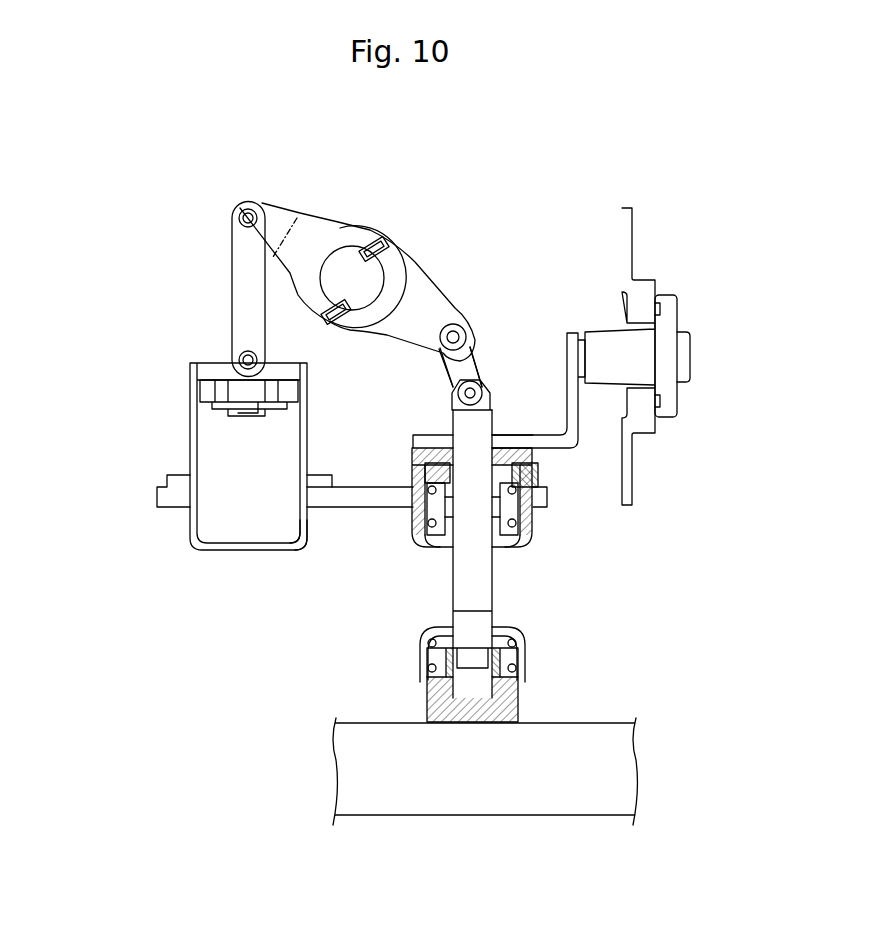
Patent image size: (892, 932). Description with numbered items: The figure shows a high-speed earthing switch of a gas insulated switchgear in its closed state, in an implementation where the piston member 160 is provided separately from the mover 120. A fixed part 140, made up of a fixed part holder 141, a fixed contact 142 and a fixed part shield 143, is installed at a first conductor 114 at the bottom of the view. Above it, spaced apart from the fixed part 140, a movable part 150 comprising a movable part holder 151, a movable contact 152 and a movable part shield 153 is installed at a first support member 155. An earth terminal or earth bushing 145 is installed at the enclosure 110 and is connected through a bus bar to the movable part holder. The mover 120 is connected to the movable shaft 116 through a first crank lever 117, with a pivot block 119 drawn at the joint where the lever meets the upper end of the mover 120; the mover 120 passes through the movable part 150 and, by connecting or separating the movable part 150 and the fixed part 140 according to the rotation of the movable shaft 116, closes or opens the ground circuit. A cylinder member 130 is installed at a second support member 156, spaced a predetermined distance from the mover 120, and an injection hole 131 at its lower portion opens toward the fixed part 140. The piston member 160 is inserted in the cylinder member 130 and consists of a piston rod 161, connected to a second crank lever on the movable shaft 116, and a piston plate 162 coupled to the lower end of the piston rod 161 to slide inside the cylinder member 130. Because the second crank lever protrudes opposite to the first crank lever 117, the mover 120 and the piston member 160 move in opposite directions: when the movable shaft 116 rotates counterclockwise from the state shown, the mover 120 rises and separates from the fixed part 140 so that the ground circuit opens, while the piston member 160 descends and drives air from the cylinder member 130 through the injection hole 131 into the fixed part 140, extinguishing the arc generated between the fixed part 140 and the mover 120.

The enclosure 110 is at (642, 290).
The first conductor 114 is at (400, 797).
The movable shaft 116 is at (420, 305).
The first crank lever 117 is at (307, 235).
The pivot block 119 is at (528, 430).
The mover 120 is at (468, 579).
The cylinder member 130 is at (185, 533).
The injection hole 131 is at (303, 545).
The fixed part 140 is at (402, 667).
The fixed part holder 141 is at (427, 688).
The fixed contact 142 is at (427, 652).
The fixed part shield 143 is at (427, 630).
The earth terminal (earth bushing) 145 is at (670, 318).
The movable part 150 is at (559, 525).
The movable part holder 151 is at (543, 504).
The movable contact 152 is at (530, 518).
The movable part shield 153 is at (522, 535).
The first support member 155 is at (540, 473).
The second support member 156 is at (323, 503).
The piston member 160 is at (183, 309).
The piston rod 161 is at (240, 277).
The piston plate 162 is at (227, 370).